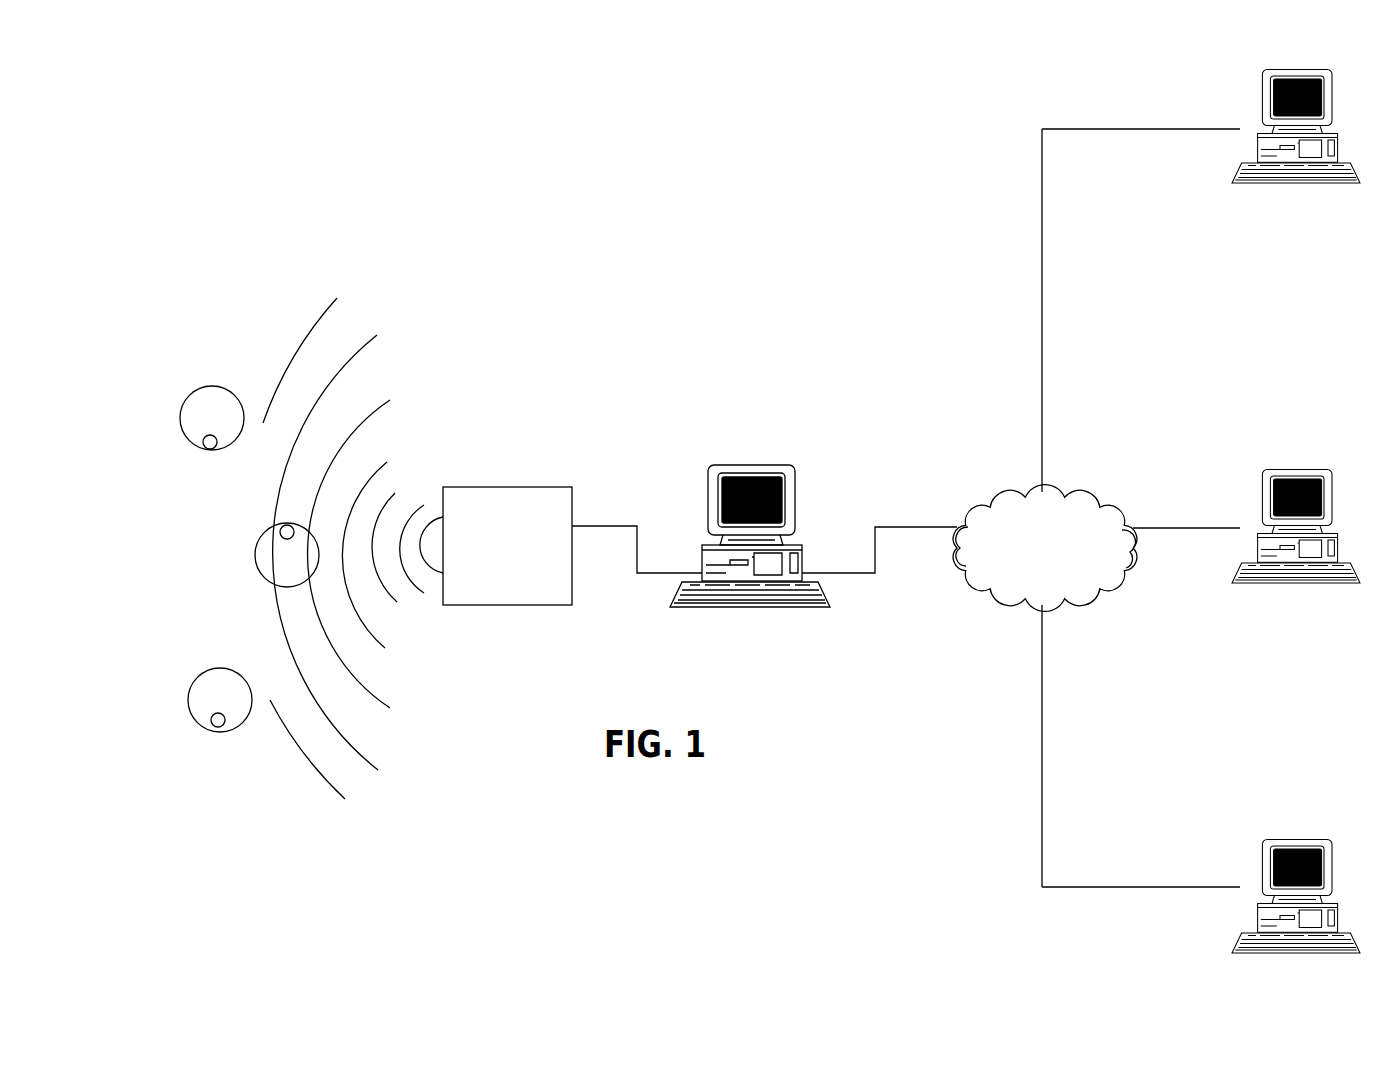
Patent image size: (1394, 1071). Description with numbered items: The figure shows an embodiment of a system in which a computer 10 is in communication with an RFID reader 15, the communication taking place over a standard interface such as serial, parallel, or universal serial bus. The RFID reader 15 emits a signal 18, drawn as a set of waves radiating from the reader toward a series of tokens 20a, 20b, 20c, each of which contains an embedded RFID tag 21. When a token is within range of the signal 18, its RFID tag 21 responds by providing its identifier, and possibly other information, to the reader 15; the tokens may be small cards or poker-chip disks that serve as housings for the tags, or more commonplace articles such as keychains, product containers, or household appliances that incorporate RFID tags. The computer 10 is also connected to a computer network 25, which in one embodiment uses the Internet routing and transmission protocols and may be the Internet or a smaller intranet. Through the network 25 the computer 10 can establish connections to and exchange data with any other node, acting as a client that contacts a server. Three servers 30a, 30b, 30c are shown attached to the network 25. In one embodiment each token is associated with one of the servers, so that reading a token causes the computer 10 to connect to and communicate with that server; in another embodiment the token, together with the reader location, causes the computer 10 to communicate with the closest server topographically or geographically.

The computer 10 is at (720, 605).
The RFID reader 15 is at (502, 488).
The signal 18 is at (451, 418).
The token 20a is at (211, 667).
The token 20b is at (249, 564).
The token 20c is at (205, 383).
The RFID tag 21 is at (203, 442).
The computer network 25 is at (1062, 490).
The server 30a is at (1295, 70).
The server 30b is at (1295, 470).
The server 30c is at (1295, 842).